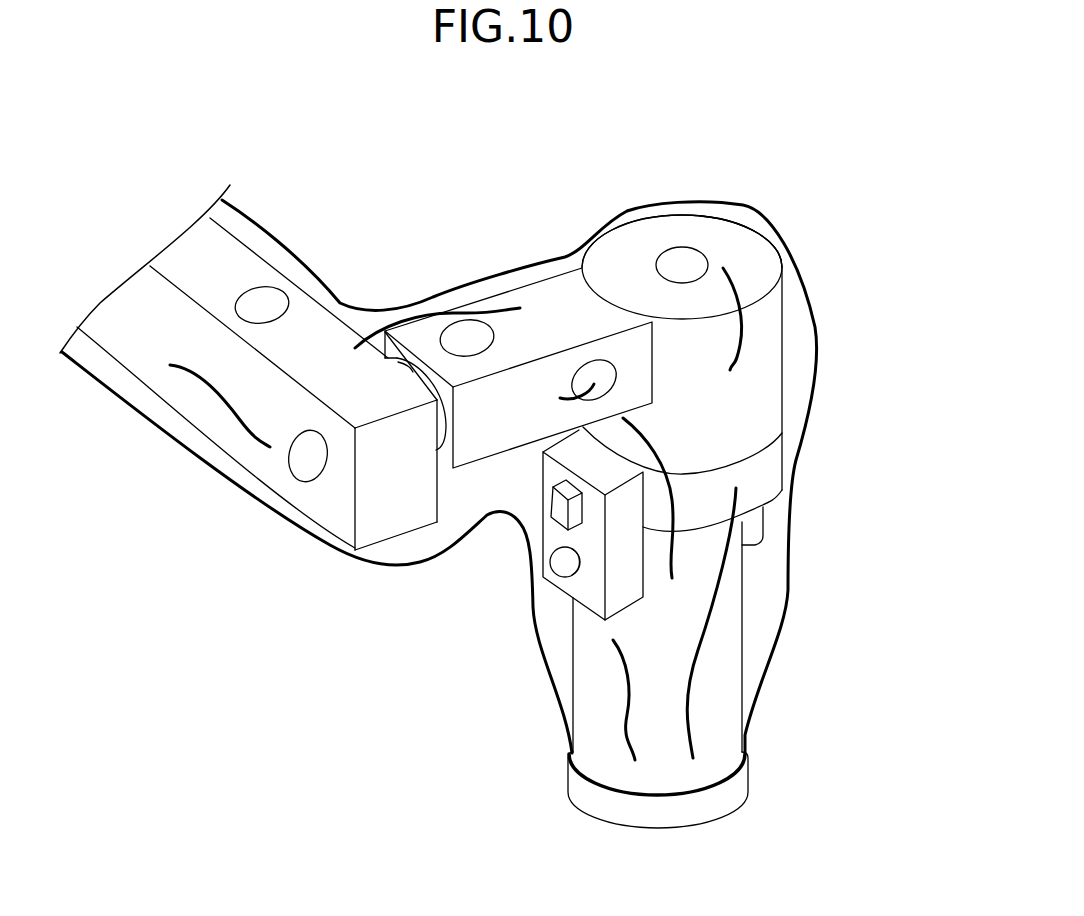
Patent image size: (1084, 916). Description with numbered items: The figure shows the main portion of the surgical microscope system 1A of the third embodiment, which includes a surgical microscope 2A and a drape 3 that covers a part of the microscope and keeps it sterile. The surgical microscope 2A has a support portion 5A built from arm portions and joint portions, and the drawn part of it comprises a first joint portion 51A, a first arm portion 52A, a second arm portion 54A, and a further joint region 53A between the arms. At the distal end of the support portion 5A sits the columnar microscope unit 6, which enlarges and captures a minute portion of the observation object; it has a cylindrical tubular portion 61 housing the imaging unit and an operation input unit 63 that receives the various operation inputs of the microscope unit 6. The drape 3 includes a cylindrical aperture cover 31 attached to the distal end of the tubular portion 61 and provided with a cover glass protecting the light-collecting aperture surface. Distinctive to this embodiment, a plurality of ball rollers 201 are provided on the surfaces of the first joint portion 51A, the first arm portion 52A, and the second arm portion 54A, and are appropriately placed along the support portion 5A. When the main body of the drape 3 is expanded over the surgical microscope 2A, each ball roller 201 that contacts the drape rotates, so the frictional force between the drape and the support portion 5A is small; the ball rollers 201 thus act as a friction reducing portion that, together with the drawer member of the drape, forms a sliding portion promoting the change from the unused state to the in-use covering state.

The surgical microscope system 1A is at (500, 115).
The surgical microscope 2A is at (784, 297).
The drape 3 is at (782, 238).
The support portion 5A is at (637, 256).
The first joint portion 51A is at (737, 238).
The first arm portion 52A is at (530, 293).
The joint 53A is at (413, 373).
The second arm portion 54A is at (155, 375).
The microscope unit 6 is at (745, 583).
The tubular portion 61 is at (745, 640).
The operation input unit 63 is at (556, 533).
The ball roller 201 is at (307, 452).
The aperture cover 31 is at (737, 783).